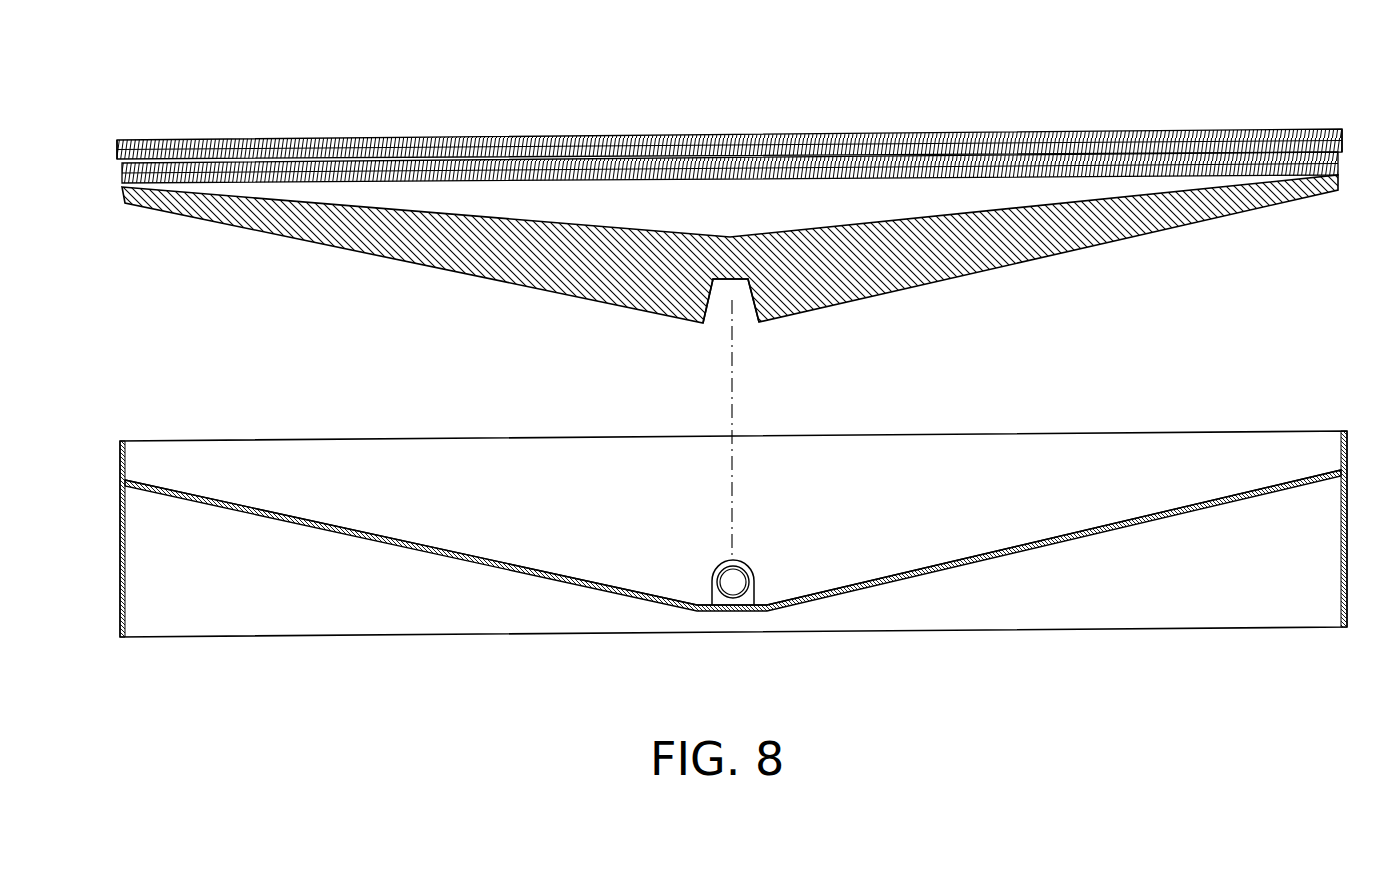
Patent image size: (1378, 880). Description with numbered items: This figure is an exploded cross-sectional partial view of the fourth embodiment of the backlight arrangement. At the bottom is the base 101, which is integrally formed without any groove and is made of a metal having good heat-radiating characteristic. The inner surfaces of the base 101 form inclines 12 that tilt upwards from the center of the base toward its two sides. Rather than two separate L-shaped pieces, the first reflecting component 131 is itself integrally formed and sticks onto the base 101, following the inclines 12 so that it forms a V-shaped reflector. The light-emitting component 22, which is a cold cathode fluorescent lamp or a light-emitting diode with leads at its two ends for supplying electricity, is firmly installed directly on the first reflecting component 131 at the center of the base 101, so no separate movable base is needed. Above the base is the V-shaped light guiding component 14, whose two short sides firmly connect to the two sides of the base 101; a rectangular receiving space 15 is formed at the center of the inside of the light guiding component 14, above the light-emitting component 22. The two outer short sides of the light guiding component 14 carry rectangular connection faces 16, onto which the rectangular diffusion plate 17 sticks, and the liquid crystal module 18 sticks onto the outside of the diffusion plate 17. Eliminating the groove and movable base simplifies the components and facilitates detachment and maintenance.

The inclines 12 is at (377, 540).
The light guiding component 14 is at (177, 207).
The receiving space 15 is at (740, 300).
The connection faces 16 is at (123, 140).
The diffusion plates 17 is at (363, 163).
The liquid crystal module 18 is at (325, 145).
The light-emitting component 22 is at (733, 577).
The base 101 is at (1140, 608).
The first reflecting component 131 is at (435, 540).